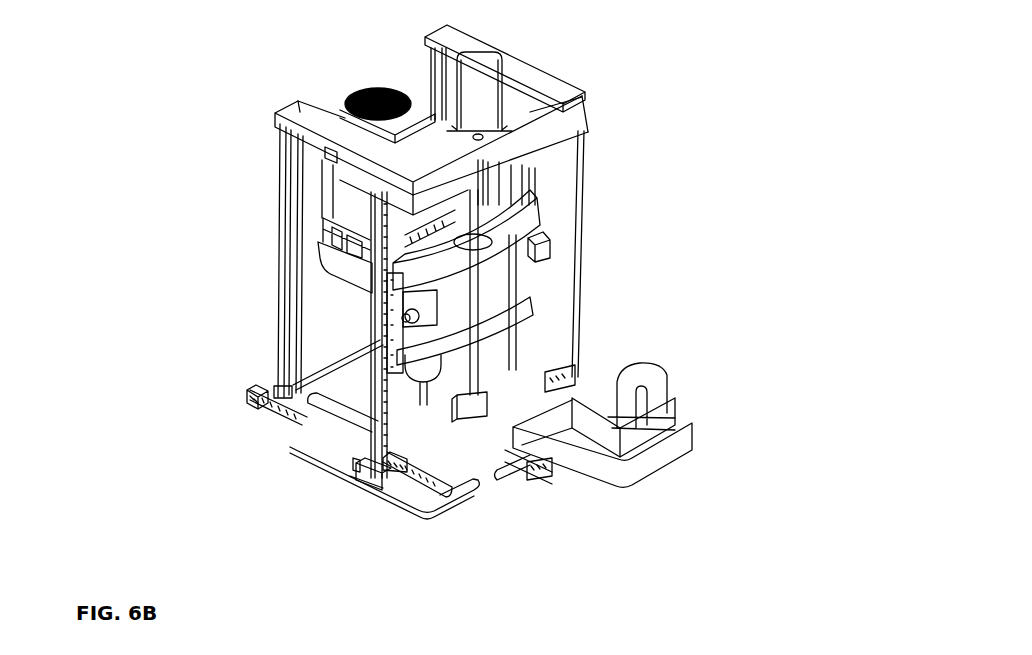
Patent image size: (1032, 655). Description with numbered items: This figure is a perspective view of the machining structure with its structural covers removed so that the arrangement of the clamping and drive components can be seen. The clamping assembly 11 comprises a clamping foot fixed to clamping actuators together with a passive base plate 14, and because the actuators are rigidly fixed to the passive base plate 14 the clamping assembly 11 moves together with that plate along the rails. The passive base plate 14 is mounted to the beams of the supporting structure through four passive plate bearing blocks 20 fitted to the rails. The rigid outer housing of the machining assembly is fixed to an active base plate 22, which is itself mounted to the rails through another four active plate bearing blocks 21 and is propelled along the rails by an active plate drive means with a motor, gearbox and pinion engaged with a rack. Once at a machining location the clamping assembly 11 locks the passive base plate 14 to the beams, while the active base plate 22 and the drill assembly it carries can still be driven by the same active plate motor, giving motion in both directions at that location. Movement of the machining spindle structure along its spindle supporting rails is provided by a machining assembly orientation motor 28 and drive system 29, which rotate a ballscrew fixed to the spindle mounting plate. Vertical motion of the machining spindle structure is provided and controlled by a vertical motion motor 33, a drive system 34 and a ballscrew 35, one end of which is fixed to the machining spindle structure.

The clamping assembly 11 is at (360, 481).
The passive base plate 14 is at (330, 357).
The passive plate bearing blocks 20 is at (253, 393).
The active plate bearing blocks 21 is at (282, 408).
The active base plate 22 is at (463, 447).
The machining assembly orientation motor 28 is at (475, 270).
The drive system 29 is at (430, 318).
The vertical motion motor 33 is at (478, 100).
The drive system 34 is at (542, 232).
The ballscrew 35 is at (535, 195).